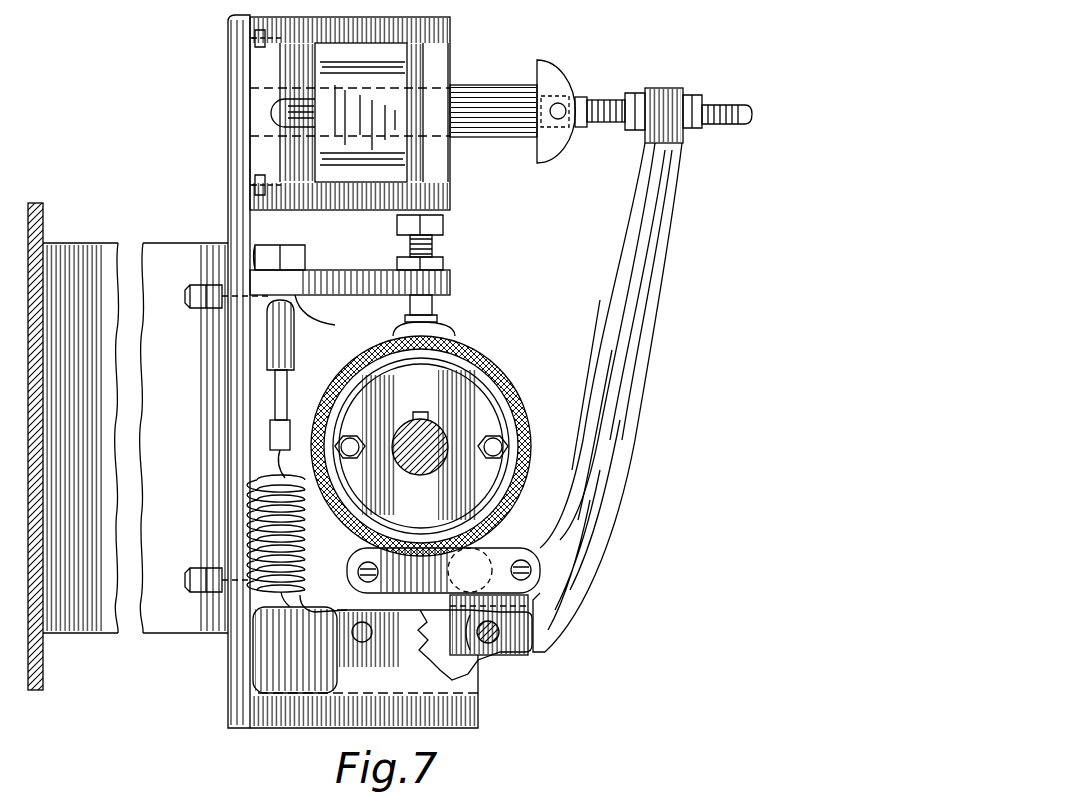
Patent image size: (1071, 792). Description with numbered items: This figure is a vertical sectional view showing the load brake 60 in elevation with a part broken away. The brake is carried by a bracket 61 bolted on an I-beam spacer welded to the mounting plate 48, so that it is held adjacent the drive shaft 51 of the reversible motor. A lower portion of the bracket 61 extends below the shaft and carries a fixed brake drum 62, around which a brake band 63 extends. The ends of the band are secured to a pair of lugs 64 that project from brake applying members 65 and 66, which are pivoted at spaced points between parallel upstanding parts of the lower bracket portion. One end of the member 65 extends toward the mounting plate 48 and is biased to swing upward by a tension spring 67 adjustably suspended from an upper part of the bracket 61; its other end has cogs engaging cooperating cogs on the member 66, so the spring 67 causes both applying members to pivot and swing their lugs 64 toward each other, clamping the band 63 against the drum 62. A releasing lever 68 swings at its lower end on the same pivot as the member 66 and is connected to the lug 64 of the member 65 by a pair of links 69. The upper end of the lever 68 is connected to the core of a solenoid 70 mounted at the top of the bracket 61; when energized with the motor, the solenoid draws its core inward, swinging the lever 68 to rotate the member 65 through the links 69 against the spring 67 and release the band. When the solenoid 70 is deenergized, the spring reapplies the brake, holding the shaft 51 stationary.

The mounting plate 48 is at (46, 203).
The drive shaft 51 is at (412, 426).
The load brake 60 is at (479, 350).
The bracket 61 is at (228, 660).
The brake drum 62 is at (490, 405).
The brake band 63 is at (533, 446).
The lugs 64 is at (348, 580).
The brake applying member 65 is at (318, 640).
The brake applying member 66 is at (480, 668).
The tension spring 67 is at (305, 535).
The releasing lever 68 is at (635, 412).
The links 69 is at (428, 556).
The solenoid 70 is at (455, 42).